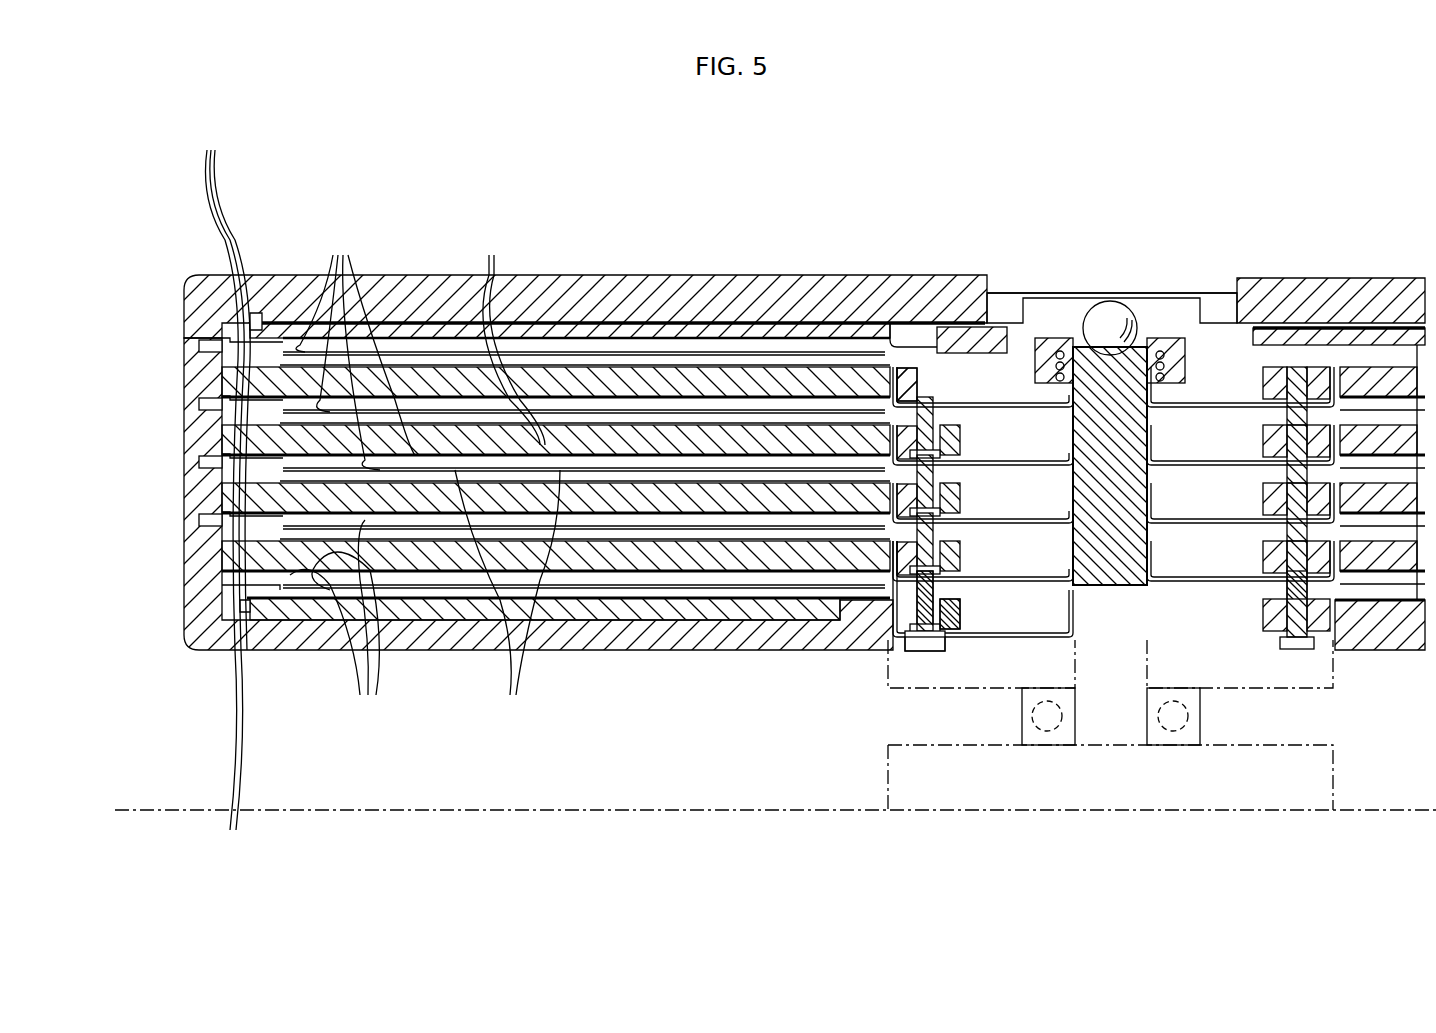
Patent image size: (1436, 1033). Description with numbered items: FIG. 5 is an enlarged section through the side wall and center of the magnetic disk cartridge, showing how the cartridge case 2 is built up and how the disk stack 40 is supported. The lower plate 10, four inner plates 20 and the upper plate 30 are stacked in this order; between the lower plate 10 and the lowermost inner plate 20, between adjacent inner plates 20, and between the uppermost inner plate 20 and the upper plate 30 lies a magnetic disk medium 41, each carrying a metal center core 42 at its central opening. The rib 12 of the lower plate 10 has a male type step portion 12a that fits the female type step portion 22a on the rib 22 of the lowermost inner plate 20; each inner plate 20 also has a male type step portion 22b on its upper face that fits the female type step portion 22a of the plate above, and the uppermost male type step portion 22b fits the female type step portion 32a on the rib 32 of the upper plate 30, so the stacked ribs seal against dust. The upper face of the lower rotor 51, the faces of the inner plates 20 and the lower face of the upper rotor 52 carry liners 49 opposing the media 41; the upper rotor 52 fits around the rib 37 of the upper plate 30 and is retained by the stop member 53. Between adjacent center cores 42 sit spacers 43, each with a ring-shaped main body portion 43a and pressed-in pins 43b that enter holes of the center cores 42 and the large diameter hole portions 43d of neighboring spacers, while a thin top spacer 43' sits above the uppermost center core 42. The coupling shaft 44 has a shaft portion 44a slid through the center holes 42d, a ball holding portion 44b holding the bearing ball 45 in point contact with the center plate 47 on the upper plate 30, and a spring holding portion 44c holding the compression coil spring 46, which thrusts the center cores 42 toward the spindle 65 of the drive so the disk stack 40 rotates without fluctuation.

The cartridge case 2 is at (943, 155).
The lower plate 10 is at (775, 655).
The rib 12 is at (157, 617).
The male type step portion 12a is at (198, 612).
The inner plate 20 is at (507, 478).
The rib 22 is at (477, 464).
The female type step portion 22a is at (222, 355).
The male type step portion 22b is at (222, 368).
The upper plate 30 is at (775, 276).
The rib 32 is at (163, 308).
The female type step portion 32a is at (200, 340).
The rib 37 is at (977, 300).
The disk stack 40 is at (246, 489).
The magnetic disk medium 41 is at (246, 489).
The center core 42 is at (1267, 300).
The center hole 42d is at (1160, 425).
The spacer 43 is at (1099, 481).
The top spacer 43' is at (964, 384).
The main body portion 43a is at (960, 418).
The pin 43b is at (930, 432).
The large diameter hole portion 43d is at (893, 300).
The coupling shaft 44 is at (1150, 300).
The shaft portion 44a is at (1107, 590).
The ball holding portion 44b is at (1063, 300).
The spring holding portion 44c is at (1030, 300).
The bearing ball 45 is at (1115, 300).
The compression coil spring 46 is at (1175, 300).
The center plate 47 is at (1218, 300).
The liner 49 is at (352, 478).
The lower rotor 51 is at (672, 648).
The upper rotor 52 is at (640, 322).
The stop member 53 is at (1332, 300).
The spindle 65 is at (1332, 718).